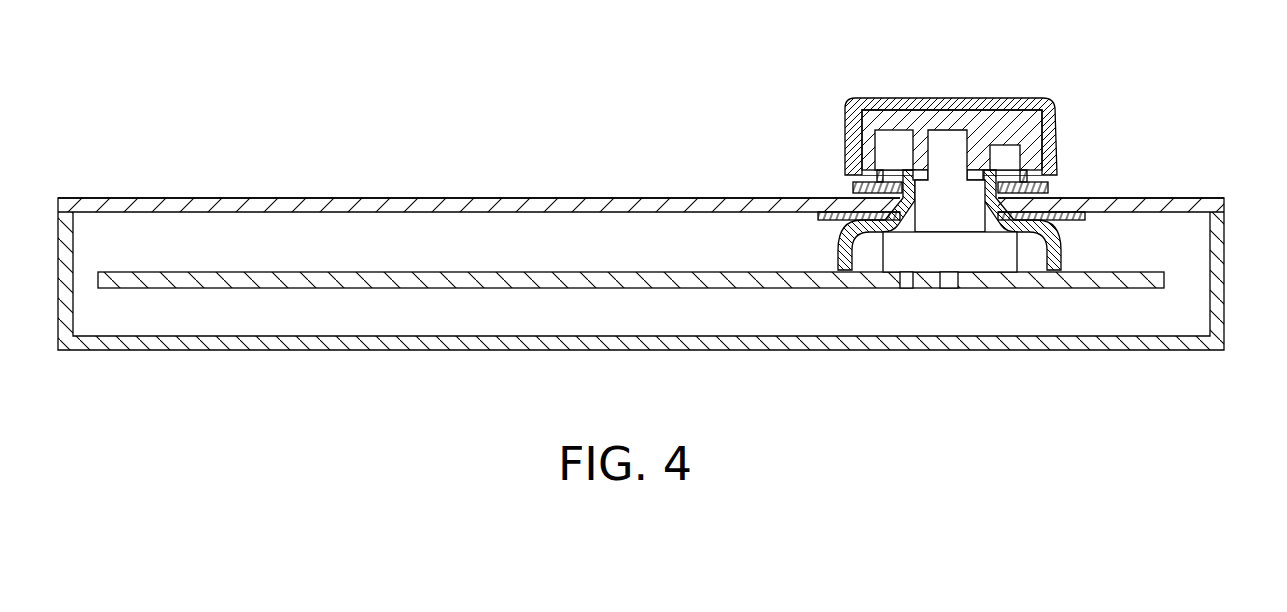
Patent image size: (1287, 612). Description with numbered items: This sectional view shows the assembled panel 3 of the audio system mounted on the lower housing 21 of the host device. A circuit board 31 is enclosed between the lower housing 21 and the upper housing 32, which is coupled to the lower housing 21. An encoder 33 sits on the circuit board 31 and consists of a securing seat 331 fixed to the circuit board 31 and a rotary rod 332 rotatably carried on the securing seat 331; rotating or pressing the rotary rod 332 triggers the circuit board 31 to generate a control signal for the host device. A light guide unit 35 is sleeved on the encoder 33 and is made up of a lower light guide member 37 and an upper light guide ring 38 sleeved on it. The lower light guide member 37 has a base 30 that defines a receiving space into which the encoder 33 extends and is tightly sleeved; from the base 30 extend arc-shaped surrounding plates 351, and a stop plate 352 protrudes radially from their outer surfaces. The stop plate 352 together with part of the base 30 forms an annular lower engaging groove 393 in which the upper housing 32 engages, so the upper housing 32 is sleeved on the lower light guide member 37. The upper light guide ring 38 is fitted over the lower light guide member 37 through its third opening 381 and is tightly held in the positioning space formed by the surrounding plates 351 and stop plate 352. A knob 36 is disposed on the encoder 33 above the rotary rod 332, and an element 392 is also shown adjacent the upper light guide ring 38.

The panel 3 is at (597, 107).
The lower housing 21 is at (1219, 278).
The base 30 is at (836, 250).
The circuit board 31 is at (1116, 288).
The upper housing 32 is at (651, 198).
The encoder 33 is at (935, 130).
The securing seat 331 is at (931, 258).
The rotary rod 332 is at (980, 135).
The light guide unit 35 is at (1165, 240).
The surrounding plates 351 is at (1042, 127).
The stop plate 352 is at (1010, 198).
The knob 36 is at (948, 98).
The lower light guide member 37 is at (1064, 245).
The upper light guide ring 38 is at (1052, 187).
The third opening 381 is at (893, 170).
The left bar 392 is at (856, 183).
The lower engaging groove 393 is at (1005, 162).